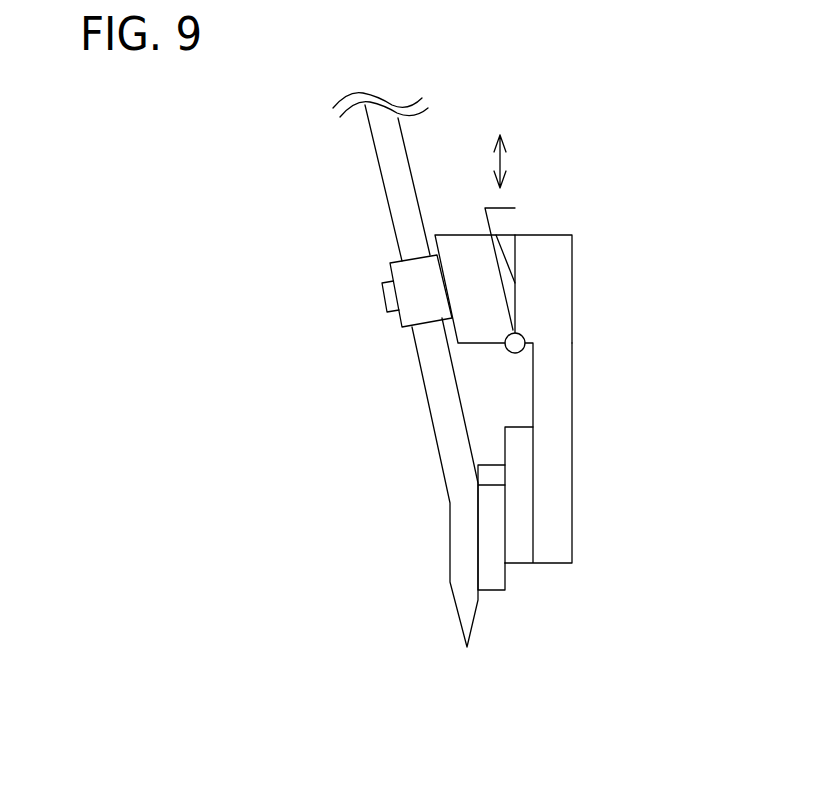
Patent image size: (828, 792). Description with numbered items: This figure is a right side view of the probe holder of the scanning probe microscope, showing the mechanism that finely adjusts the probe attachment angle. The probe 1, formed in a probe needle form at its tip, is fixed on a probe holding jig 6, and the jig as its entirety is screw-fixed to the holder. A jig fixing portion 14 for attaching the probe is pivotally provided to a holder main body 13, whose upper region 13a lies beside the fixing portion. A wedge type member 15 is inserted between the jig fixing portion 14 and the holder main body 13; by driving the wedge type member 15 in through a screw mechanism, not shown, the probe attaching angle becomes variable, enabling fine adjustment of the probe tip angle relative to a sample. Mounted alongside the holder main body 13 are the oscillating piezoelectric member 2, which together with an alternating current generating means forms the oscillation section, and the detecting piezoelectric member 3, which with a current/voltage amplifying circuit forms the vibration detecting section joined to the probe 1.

The probe 1 is at (465, 537).
The oscillating piezoelectric member 2 is at (515, 442).
The detecting piezoelectric member 3 is at (492, 505).
The probe holding jig 6 is at (420, 310).
The holder main body 13 is at (545, 375).
The frame upper portion 13a is at (535, 277).
The jig fixing portion 14 is at (465, 262).
The wedge type member 15 is at (502, 220).